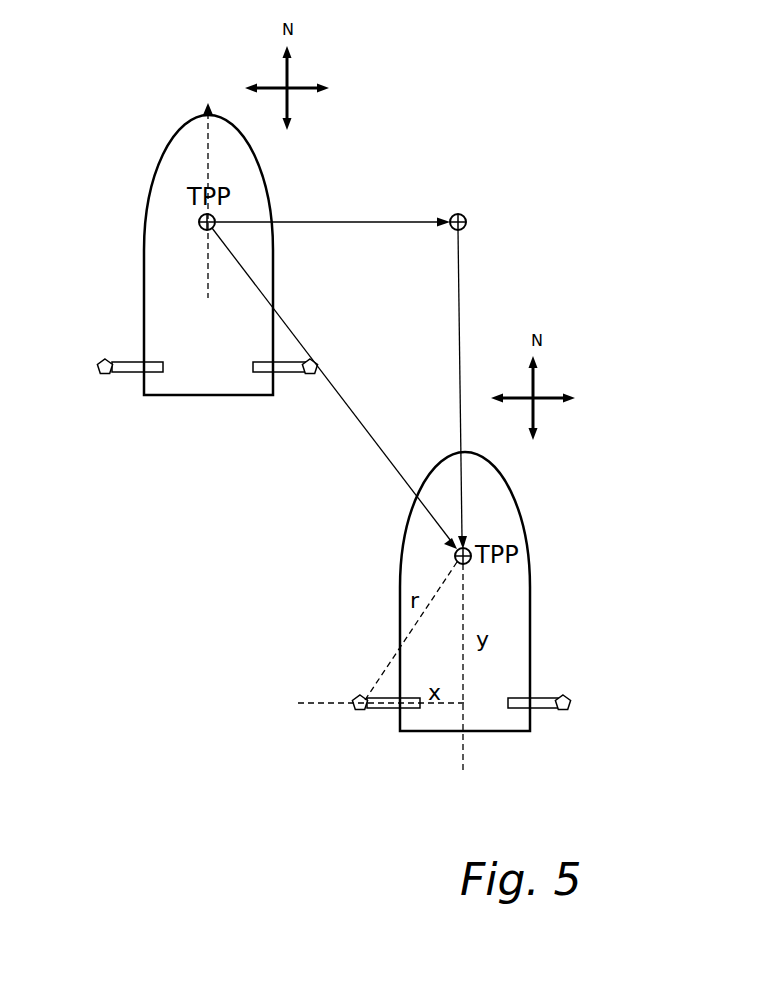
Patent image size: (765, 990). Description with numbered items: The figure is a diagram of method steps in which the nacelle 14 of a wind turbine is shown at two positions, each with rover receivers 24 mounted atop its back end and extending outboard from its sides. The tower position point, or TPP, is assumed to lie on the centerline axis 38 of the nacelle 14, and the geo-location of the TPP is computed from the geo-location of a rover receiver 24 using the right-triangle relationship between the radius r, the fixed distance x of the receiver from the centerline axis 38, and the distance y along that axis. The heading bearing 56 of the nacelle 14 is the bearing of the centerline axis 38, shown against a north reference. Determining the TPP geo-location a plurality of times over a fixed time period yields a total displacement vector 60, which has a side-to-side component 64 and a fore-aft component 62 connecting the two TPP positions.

The nacelle 14 is at (147, 212).
The rover receiver 24 is at (98, 367).
The centerline axis 38 is at (208, 160).
The heading bearing 56 is at (194, 71).
The total displacement vector 60 is at (382, 453).
The fore-aft component 62 is at (458, 327).
The side-to-side component 64 is at (376, 222).